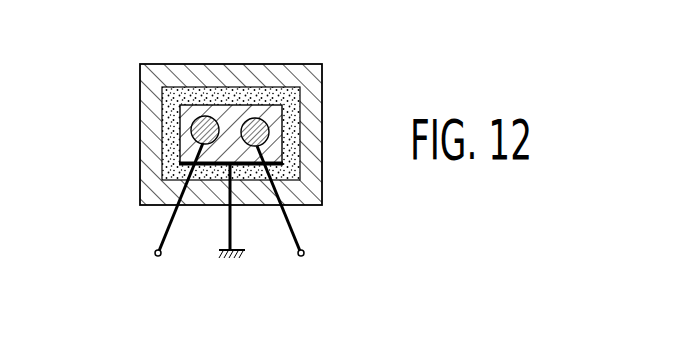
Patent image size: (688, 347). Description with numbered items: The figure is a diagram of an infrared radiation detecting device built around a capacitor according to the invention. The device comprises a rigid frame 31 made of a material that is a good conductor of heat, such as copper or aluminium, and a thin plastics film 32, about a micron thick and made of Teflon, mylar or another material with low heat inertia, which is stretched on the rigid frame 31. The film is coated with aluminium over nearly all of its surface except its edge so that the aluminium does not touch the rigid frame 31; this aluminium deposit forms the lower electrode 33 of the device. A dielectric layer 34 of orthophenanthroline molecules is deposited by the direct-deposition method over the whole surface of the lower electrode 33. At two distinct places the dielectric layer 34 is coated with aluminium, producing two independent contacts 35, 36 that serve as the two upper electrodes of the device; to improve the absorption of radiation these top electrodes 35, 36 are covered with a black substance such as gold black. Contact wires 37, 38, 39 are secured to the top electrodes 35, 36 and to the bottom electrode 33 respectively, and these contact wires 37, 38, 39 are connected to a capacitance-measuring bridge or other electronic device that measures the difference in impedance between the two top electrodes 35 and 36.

The rigid frame 31 is at (157, 72).
The thin plastics film 32 is at (187, 87).
The lower electrode 33 is at (164, 175).
The dielectric layer 34 is at (265, 107).
The first upper electrode contact 35 is at (191, 131).
The second upper electrode contact 36 is at (269, 127).
The contact wire 37 is at (155, 253).
The contact wire 38 is at (304, 253).
The contact wire 39 is at (230, 240).